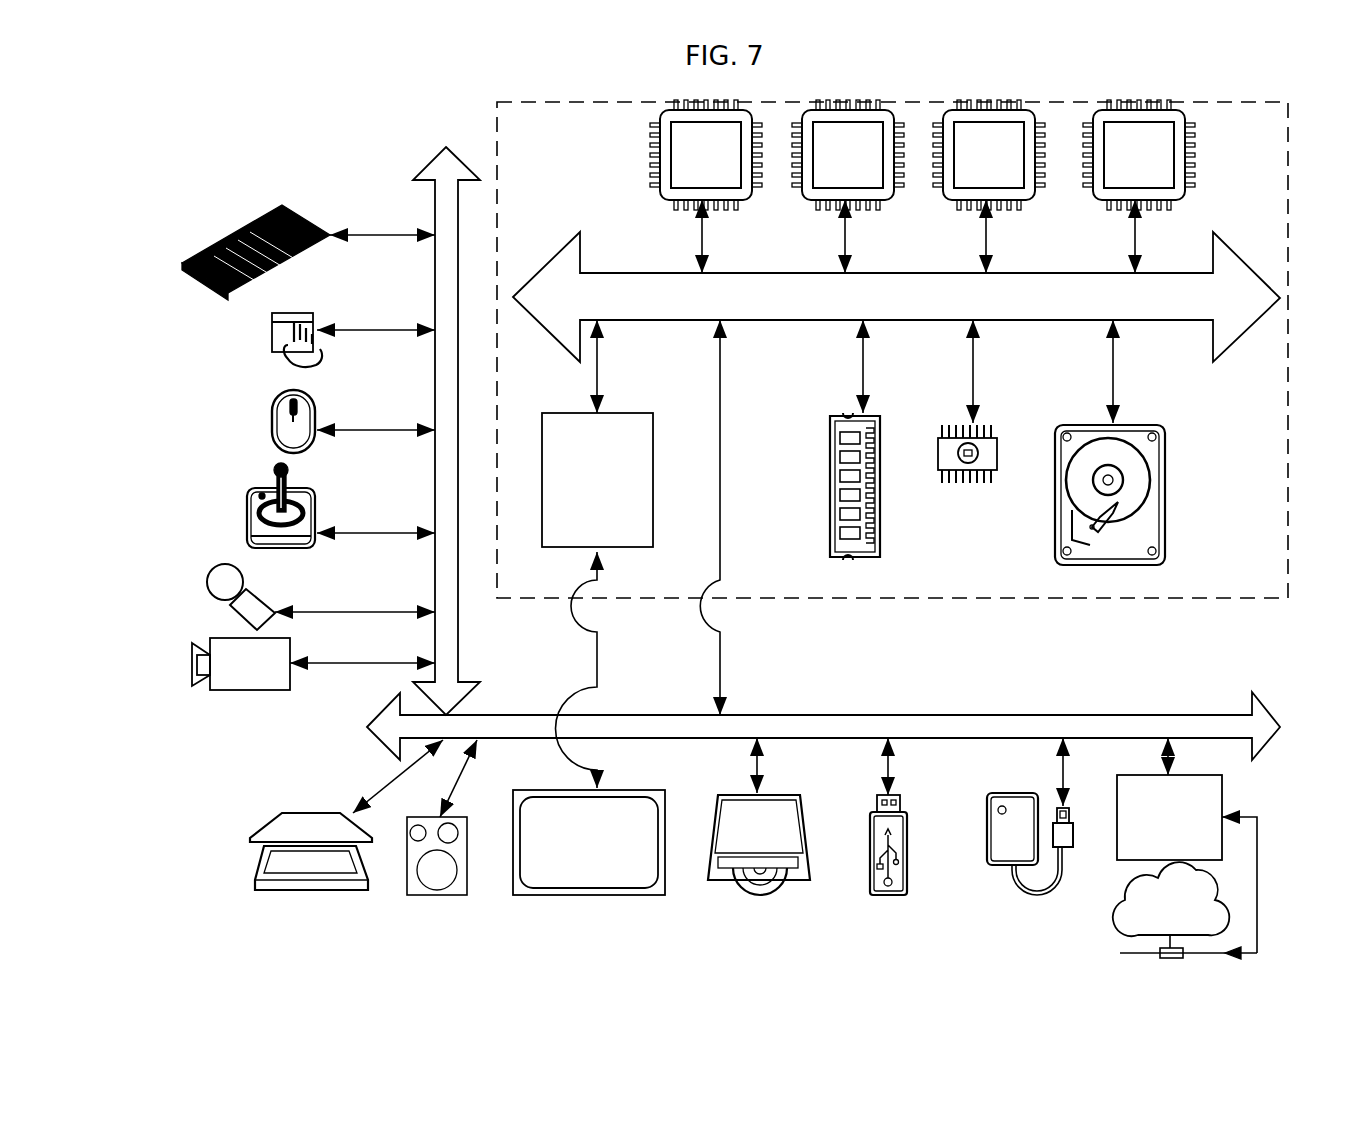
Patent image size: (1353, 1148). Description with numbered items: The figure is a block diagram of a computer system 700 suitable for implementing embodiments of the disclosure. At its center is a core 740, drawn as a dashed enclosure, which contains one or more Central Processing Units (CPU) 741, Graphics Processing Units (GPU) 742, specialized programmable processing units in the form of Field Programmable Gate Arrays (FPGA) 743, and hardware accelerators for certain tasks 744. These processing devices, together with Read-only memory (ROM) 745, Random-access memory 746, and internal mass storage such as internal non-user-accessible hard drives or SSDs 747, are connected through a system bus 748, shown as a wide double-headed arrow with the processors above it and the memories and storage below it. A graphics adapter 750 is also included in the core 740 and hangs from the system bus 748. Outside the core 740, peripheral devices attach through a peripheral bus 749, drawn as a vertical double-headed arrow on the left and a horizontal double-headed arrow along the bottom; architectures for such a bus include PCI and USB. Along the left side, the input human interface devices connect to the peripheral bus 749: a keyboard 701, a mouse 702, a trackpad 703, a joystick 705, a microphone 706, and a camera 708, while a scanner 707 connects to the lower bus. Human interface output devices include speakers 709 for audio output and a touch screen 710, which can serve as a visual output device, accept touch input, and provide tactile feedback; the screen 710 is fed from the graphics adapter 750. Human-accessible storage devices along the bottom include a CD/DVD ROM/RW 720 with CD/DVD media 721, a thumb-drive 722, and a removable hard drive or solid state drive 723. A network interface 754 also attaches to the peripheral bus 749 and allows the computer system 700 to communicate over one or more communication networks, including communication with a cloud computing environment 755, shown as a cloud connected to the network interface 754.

The computer system 700 is at (700, 529).
The keyboard 701 is at (182, 265).
The mouse 702 is at (268, 425).
The trackpad 703 is at (272, 342).
The joystick 705 is at (247, 532).
The microphone 706 is at (207, 585).
The scanner 707 is at (255, 876).
The camera 708 is at (192, 664).
The speakers 709 is at (437, 893).
The touch screen 710 is at (580, 895).
The CD/DVD ROM/RW 720 is at (805, 880).
The CD/DVD media 721 is at (740, 890).
The thumb-drive 722 is at (887, 895).
The removable hard drive or solid state drive 723 is at (985, 868).
The core 740 is at (910, 600).
The Central Processing Unit (CPU) 741 is at (706, 186).
The Graphics Processing Unit (GPU) 742 is at (848, 186).
The Field Programmable Gate Array (FPGA) 743 is at (989, 186).
The hardware accelerator 744 is at (1139, 186).
The Read-only memory (ROM) 745 is at (960, 483).
The Random-access memory 746 is at (830, 483).
The internal mass storage 747 is at (1070, 423).
The system bus 748 is at (896, 297).
The peripheral bus 749 is at (435, 185).
The graphics adapter 750 is at (597, 433).
The network interface 754 is at (1169, 799).
The cloud computing environment 755 is at (1120, 915).